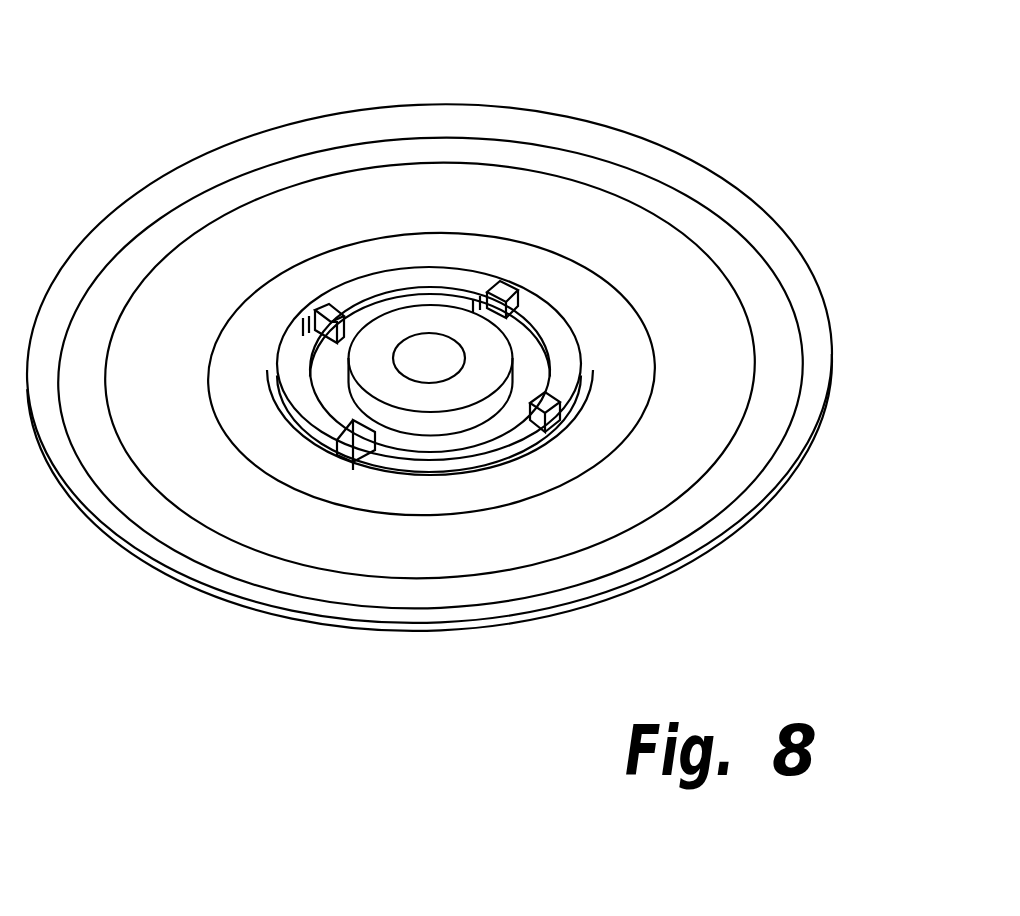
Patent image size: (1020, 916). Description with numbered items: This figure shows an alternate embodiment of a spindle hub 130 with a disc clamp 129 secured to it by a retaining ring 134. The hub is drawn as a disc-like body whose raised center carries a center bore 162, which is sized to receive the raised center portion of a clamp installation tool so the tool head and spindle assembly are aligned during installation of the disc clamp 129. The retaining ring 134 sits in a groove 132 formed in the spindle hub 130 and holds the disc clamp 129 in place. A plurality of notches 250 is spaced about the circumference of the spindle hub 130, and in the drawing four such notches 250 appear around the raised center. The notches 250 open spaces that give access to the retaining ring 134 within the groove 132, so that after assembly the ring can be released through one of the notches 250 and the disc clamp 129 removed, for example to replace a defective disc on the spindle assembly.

The disc clamp 129 is at (767, 298).
The spindle hub 130 is at (589, 366).
The groove 132 is at (465, 280).
The retaining ring 134 is at (527, 288).
The center bore 162 is at (410, 368).
The notches 250 is at (301, 325).